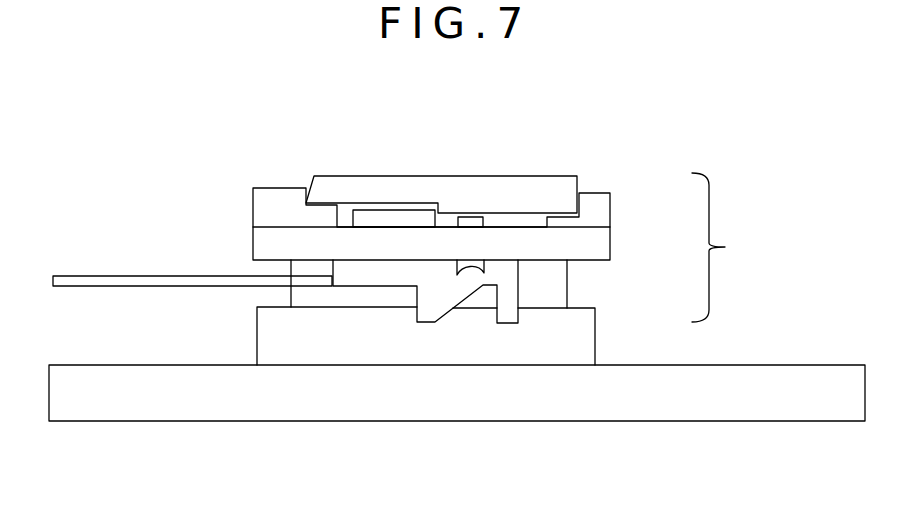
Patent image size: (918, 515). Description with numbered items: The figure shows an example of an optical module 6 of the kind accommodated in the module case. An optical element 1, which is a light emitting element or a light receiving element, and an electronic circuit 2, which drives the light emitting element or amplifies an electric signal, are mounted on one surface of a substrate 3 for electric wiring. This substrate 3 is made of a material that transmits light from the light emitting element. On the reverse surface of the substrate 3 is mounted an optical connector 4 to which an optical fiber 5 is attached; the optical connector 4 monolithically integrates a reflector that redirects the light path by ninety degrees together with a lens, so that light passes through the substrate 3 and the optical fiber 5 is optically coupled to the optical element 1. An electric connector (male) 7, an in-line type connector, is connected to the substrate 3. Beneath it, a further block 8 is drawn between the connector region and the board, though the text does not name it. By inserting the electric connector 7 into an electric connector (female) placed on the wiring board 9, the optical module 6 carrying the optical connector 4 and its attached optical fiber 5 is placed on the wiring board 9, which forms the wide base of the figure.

The optical element 1 is at (470, 215).
The electronic circuit 2 is at (393, 215).
The substrate for electric wiring 3 is at (582, 242).
The optical connector 4 is at (493, 273).
The optical fiber 5 is at (187, 276).
The optical module 6 is at (755, 260).
The electric connector (male) 7 is at (550, 283).
The base 8 is at (572, 338).
The wiring board 9 is at (620, 407).